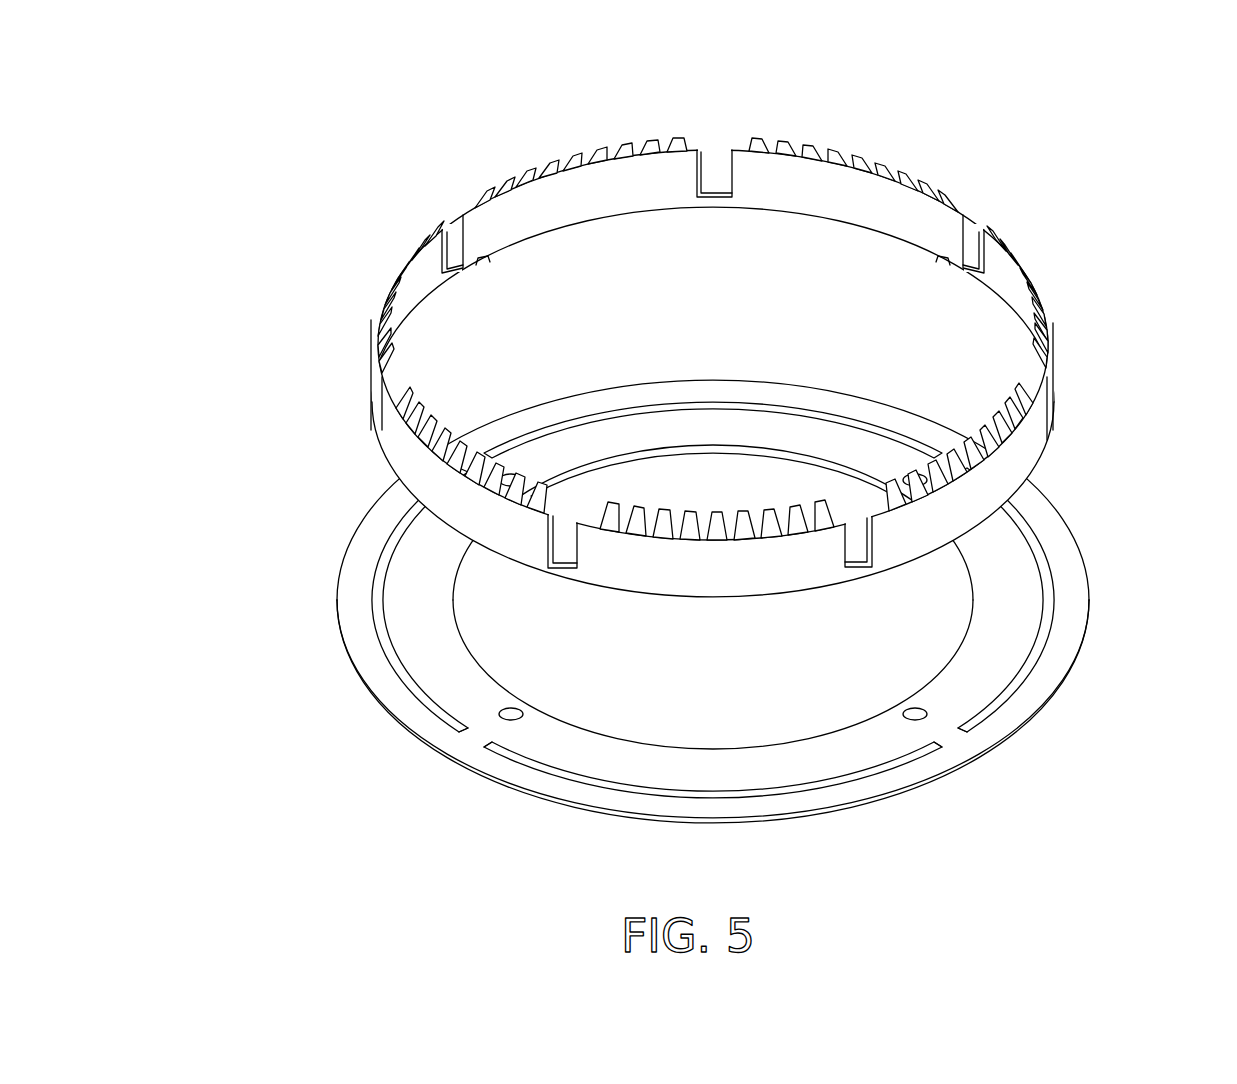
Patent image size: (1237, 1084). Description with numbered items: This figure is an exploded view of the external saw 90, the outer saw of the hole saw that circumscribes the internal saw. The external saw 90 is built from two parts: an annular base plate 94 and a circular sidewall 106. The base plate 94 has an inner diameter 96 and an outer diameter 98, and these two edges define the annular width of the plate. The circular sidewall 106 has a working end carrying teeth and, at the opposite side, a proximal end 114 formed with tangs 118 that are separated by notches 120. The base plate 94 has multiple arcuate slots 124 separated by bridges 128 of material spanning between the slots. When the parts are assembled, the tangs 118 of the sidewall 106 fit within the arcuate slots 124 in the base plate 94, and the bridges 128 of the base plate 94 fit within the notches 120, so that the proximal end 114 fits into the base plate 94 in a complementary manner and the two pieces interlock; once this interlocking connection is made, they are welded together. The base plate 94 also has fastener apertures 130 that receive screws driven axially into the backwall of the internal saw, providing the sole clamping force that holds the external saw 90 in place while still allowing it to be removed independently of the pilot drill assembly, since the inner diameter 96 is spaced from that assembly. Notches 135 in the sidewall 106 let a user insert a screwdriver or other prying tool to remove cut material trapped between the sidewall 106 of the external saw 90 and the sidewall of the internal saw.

The external saw 90 is at (699, 474).
The base plate 94 is at (618, 800).
The inner diameter 96 is at (958, 575).
The outer diameter 98 is at (1098, 601).
The circular sidewall 106 is at (400, 453).
The proximal end 114 is at (518, 583).
The tangs 118 is at (886, 569).
The notches 120 is at (488, 268).
The arcuate slots 124 is at (623, 400).
The bridges 128 is at (468, 738).
The fastener apertures 130 is at (516, 712).
The notches 135 is at (718, 160).